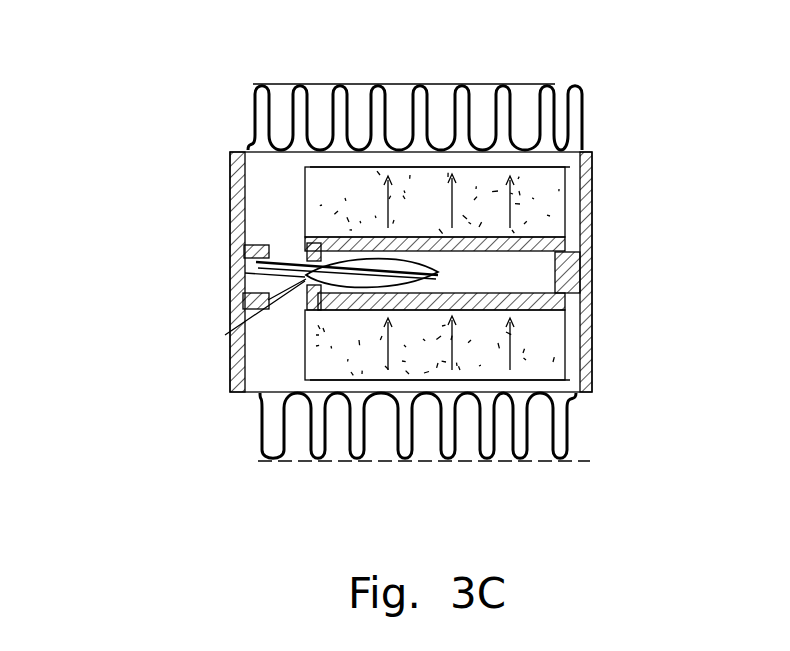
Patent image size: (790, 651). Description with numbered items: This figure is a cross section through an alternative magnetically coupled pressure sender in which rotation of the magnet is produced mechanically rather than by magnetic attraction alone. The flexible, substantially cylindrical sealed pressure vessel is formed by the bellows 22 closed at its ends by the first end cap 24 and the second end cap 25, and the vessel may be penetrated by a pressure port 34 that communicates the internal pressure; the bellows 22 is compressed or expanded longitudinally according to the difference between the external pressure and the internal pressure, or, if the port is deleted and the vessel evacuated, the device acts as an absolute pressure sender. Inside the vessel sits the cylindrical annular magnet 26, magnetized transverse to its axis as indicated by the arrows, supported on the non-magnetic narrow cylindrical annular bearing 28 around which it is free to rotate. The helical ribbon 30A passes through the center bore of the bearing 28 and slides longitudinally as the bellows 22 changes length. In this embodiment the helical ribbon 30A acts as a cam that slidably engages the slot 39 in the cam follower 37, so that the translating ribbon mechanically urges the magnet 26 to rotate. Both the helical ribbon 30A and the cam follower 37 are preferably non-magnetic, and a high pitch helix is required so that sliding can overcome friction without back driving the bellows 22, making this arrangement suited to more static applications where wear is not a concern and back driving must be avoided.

The bellows 22 is at (503, 83).
The first end cap 24 is at (595, 368).
The second end cap 25 is at (230, 380).
The cylindrical annular magnet 26 is at (547, 185).
The annular bearing 28 is at (593, 302).
The pressure port 34 is at (597, 185).
The slot 39 is at (306, 272).
The helical ribbon 30A is at (245, 273).
The cam follower 37 is at (225, 335).